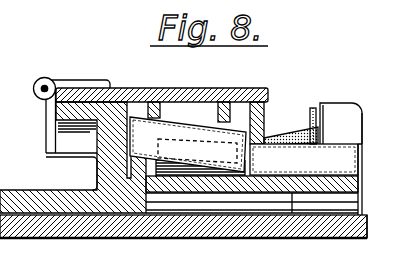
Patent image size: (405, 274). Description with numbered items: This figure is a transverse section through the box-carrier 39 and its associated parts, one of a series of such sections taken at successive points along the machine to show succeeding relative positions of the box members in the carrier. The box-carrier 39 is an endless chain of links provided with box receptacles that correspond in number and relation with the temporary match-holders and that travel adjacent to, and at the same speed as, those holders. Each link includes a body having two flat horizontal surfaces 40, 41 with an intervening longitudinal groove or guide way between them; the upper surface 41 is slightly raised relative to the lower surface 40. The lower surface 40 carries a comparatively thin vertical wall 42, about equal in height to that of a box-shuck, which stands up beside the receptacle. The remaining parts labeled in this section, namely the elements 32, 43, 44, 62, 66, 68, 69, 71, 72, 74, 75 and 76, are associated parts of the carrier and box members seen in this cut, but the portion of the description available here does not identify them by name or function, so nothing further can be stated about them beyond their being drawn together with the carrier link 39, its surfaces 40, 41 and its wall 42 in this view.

The base plate 32 is at (50, 231).
The box-carrier 39 is at (344, 101).
The lower flat horizontal surface 40 is at (188, 172).
The upper flat horizontal surface 41 is at (345, 176).
The vertical wall 42 is at (188, 170).
The end block 43 is at (341, 123).
The pin 44 is at (287, 129).
The packing layer 62 is at (258, 181).
The intermediate plate 66 is at (236, 194).
The slot 68 is at (96, 172).
The pivoted lever 69 is at (46, 130).
The body block 71 is at (139, 172).
The block x 72 is at (134, 162).
The spacer 74 is at (216, 113).
The inclined shelf 75 is at (266, 132).
The top plate 76 is at (196, 96).